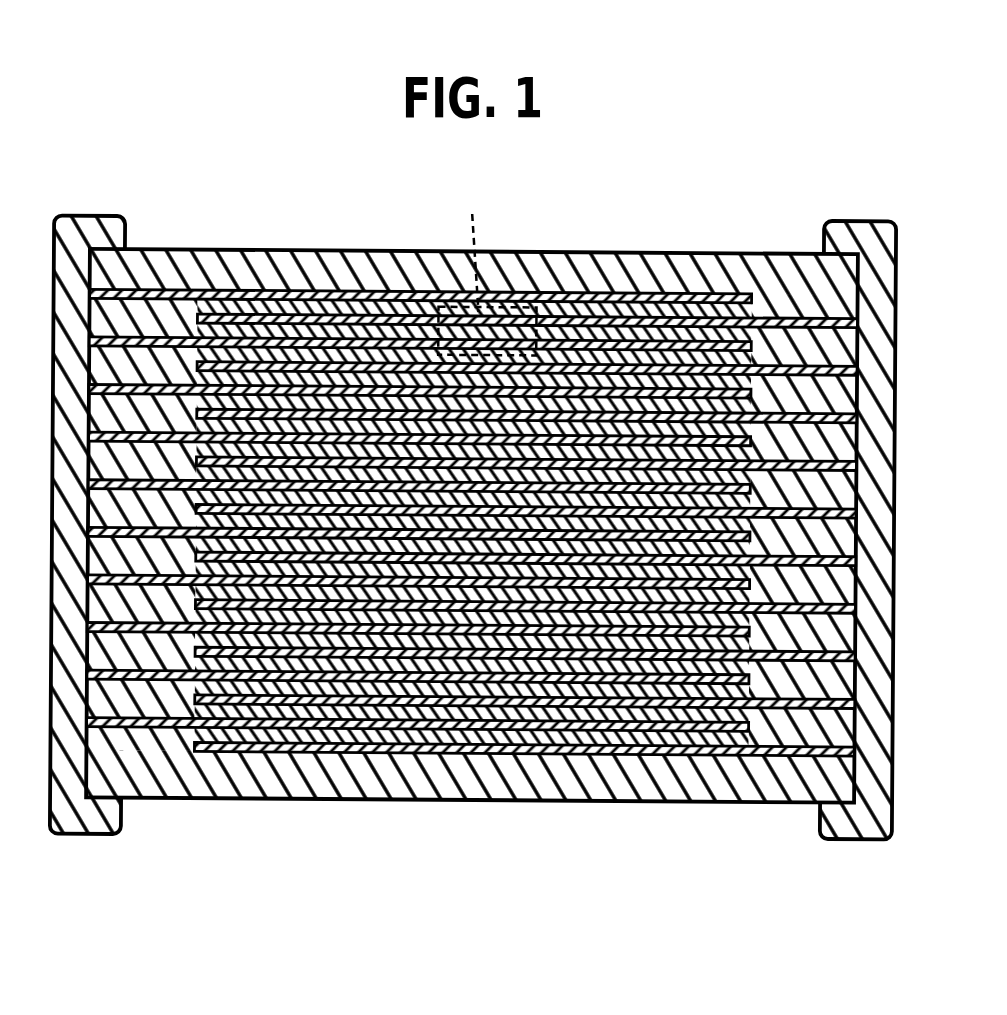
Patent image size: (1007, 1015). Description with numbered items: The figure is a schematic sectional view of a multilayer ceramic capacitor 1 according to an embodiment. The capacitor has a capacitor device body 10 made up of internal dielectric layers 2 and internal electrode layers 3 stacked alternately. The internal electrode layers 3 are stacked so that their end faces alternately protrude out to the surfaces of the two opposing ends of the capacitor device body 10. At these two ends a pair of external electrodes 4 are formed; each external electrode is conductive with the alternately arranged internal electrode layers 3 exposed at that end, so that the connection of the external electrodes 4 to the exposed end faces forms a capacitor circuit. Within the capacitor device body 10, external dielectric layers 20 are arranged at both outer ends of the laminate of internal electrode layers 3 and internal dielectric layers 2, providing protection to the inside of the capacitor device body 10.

The multilayer ceramic capacitor 1 is at (331, 878).
The internal dielectric layers 2 is at (349, 312).
The internal electrode layers 3 is at (581, 268).
The external electrodes 4 is at (858, 240).
The capacitor device body 10 is at (668, 802).
The external dielectric layers 20 is at (675, 268).